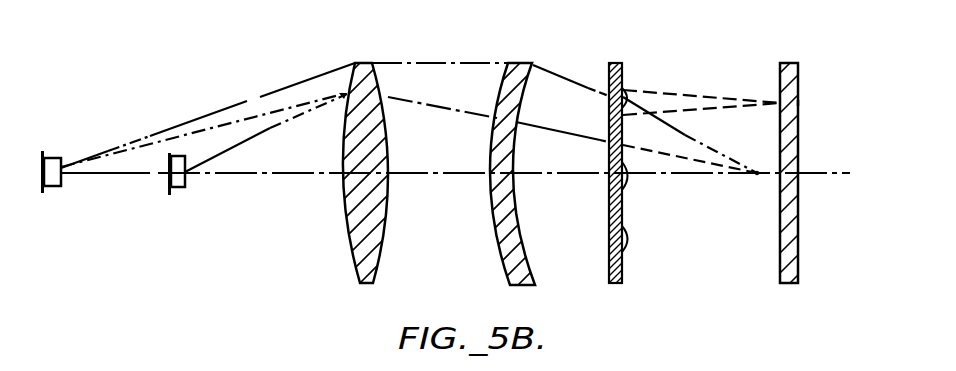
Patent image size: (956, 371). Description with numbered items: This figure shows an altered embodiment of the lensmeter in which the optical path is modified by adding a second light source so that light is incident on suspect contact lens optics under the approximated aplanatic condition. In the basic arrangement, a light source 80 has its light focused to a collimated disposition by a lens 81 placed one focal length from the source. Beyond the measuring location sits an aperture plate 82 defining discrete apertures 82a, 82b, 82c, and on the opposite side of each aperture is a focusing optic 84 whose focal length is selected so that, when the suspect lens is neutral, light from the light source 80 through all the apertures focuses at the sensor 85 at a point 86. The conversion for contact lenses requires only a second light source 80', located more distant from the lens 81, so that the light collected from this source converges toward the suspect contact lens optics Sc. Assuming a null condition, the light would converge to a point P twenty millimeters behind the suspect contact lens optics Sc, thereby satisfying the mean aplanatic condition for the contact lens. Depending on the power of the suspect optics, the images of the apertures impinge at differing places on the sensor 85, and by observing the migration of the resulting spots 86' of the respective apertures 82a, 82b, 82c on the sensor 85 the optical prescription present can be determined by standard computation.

The second light source 80' is at (71, 150).
The light source 80 is at (192, 139).
The lens 81 is at (362, 63).
The suspect contact lens optics Sc is at (520, 63).
The aperture plate 82 is at (614, 189).
The aperture 82a is at (609, 106).
The aperture 82b is at (609, 238).
The aperture 82c is at (609, 178).
The focusing optic 84 is at (630, 96).
The point P is at (758, 176).
The sensor 85 is at (799, 143).
The point 86 is at (812, 156).
The spots 86' is at (821, 103).